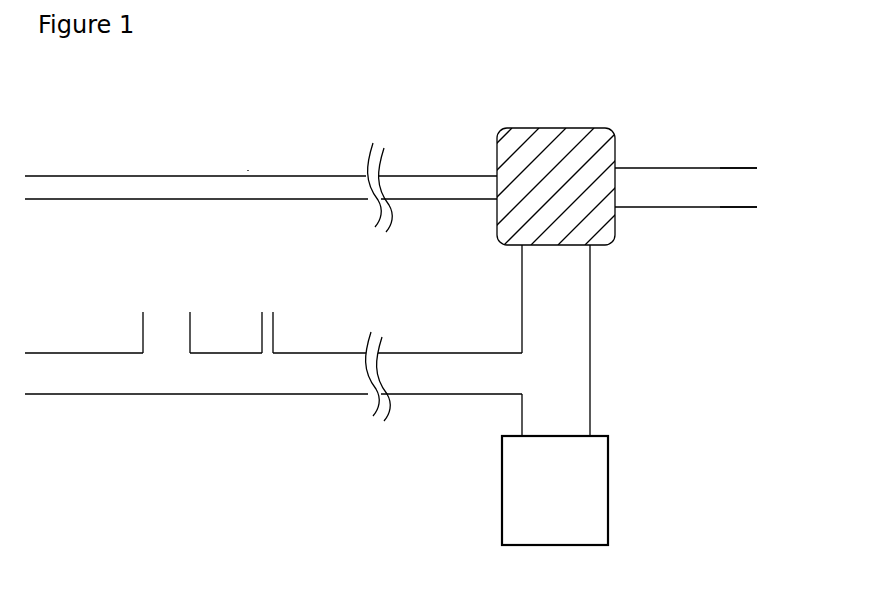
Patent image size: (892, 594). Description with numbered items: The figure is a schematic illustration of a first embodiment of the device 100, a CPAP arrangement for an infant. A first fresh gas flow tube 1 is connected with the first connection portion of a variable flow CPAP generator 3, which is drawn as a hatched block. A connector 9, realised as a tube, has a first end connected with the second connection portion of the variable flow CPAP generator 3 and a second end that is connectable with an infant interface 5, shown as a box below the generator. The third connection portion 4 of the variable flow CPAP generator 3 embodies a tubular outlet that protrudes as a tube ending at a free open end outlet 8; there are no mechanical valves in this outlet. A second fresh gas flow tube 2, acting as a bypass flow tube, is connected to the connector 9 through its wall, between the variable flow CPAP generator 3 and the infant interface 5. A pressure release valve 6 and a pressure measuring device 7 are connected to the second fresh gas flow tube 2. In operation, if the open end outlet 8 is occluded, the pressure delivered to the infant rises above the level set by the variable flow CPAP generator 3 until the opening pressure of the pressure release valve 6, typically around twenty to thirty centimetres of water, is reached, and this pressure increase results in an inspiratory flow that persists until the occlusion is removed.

The device 100 is at (268, 152).
The first fresh gas flow tube 1 is at (122, 188).
The second fresh gas flow tube 2 is at (104, 366).
The variable flow CPAP generator 3 is at (558, 148).
The third connection portion 4 is at (663, 182).
The infant interface 5 is at (566, 493).
The pressure release valve 6 is at (171, 322).
The pressure measuring device 7 is at (268, 320).
The open end outlet 8 is at (753, 188).
The connector 9 is at (563, 372).